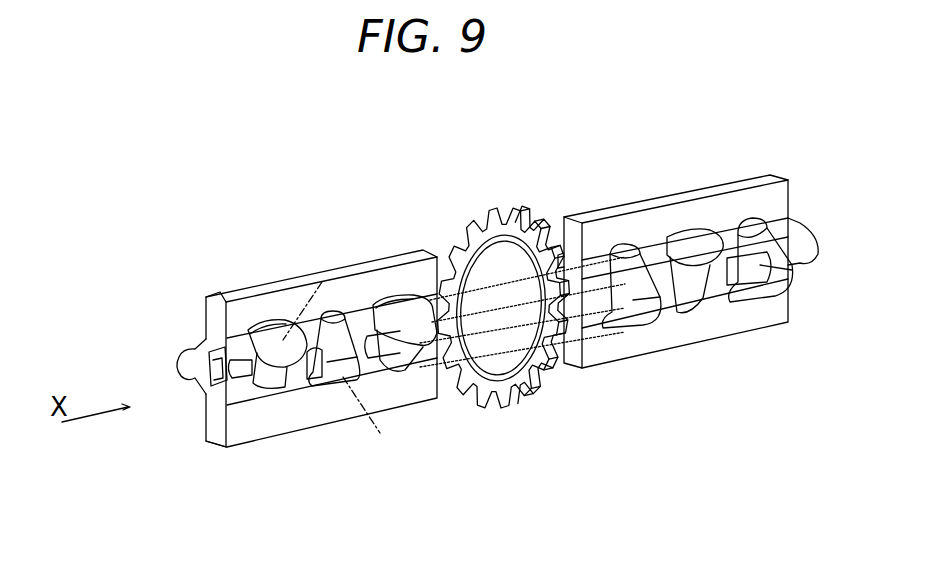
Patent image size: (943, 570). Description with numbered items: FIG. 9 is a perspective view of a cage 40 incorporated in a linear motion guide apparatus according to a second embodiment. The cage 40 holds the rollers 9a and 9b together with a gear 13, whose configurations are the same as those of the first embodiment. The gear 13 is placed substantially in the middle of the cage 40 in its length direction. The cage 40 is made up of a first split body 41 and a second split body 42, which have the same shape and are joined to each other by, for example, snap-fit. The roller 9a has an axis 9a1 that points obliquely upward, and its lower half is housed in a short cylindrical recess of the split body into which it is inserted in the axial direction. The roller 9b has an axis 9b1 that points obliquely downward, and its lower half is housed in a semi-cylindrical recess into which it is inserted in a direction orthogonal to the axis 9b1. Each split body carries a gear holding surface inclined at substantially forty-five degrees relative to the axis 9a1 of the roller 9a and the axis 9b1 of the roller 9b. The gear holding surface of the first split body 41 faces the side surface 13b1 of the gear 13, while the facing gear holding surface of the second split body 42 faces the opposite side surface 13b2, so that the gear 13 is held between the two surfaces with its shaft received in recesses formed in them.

The roller 9a is at (272, 332).
The axis of the roller 9a 9a1 is at (302, 308).
The roller 9b is at (337, 317).
The axis of the roller 9b 9b1 is at (372, 425).
The gear 13 is at (530, 257).
The side surface of the gear 13b1 is at (456, 264).
The side surface of the gear 13b2 is at (524, 259).
The cage 40 is at (517, 502).
The first split body 41 is at (400, 400).
The second split body 42 is at (530, 307).